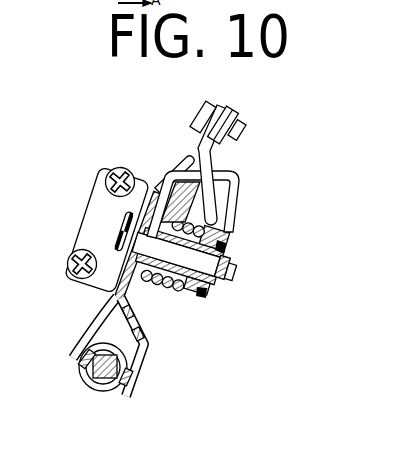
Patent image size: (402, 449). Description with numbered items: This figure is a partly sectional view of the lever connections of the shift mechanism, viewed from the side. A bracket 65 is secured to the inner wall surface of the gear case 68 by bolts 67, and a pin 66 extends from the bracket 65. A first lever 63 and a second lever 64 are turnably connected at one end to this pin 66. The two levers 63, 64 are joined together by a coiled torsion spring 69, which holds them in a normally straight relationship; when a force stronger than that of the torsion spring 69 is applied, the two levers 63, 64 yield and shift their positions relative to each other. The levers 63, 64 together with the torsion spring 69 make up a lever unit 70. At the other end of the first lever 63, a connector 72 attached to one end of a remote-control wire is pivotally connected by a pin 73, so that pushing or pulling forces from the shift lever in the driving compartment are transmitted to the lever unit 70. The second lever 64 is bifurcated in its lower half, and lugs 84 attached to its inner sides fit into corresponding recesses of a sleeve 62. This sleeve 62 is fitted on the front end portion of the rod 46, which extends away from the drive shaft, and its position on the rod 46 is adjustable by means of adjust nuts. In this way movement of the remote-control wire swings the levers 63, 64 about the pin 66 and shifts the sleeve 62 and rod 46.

The rod 46 is at (97, 381).
The sleeve 62 is at (134, 349).
The first lever 63 is at (236, 187).
The second lever 64 is at (134, 300).
The bracket 65 is at (154, 178).
The pin 66 is at (212, 268).
The bolts 67 is at (108, 178).
The gear case 68 is at (60, 219).
The coiled torsion spring 69 is at (191, 200).
The lever unit 70 is at (170, 165).
The connector 72 is at (221, 76).
The pin 73 is at (244, 135).
The lugs 84 is at (76, 353).